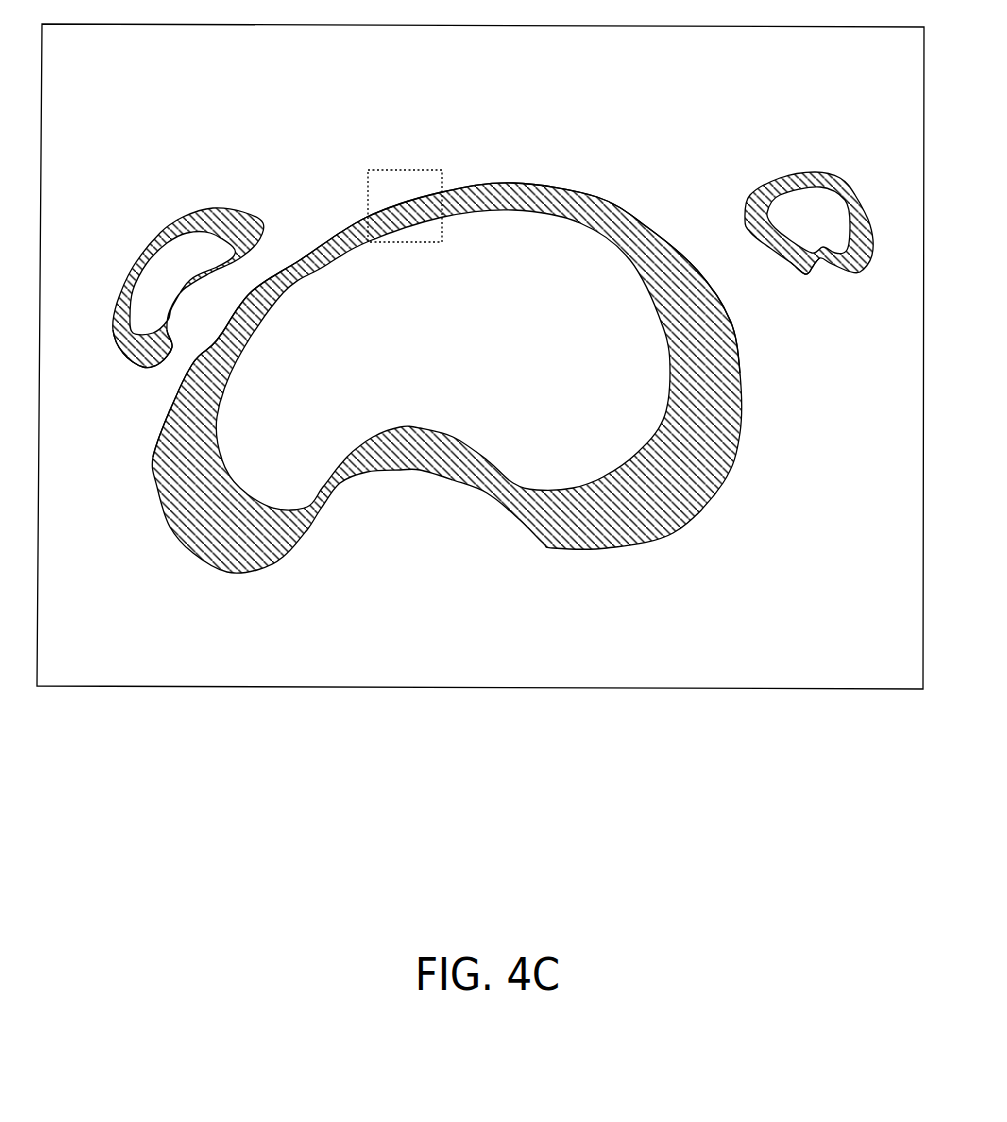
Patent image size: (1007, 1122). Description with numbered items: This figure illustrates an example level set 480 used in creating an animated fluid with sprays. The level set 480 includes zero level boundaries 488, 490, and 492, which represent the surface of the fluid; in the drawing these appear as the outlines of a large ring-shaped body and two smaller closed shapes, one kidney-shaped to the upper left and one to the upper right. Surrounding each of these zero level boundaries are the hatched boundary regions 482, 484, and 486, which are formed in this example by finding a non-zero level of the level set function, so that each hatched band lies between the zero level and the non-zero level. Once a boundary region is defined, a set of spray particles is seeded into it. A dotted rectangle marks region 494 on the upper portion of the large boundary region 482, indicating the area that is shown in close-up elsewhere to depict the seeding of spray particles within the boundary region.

The level set 480 is at (480, 356).
The boundary region 482 is at (632, 503).
The boundary region 484 is at (224, 210).
The boundary region 486 is at (753, 208).
The zero level boundary 488 is at (557, 185).
The zero level boundary 490 is at (121, 356).
The zero level boundary 492 is at (802, 272).
The region 494 is at (388, 170).